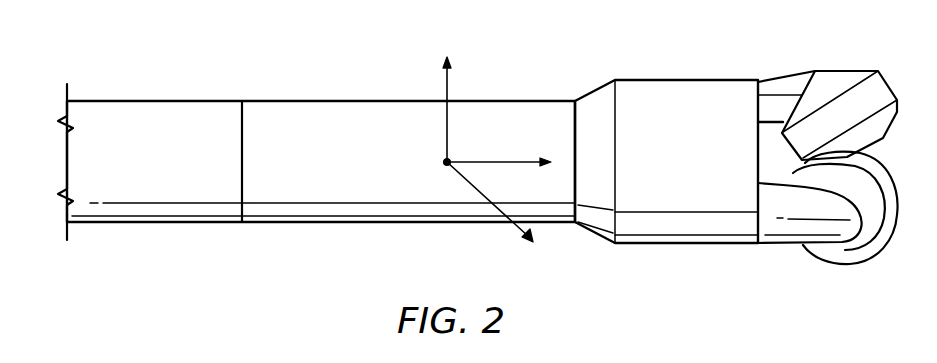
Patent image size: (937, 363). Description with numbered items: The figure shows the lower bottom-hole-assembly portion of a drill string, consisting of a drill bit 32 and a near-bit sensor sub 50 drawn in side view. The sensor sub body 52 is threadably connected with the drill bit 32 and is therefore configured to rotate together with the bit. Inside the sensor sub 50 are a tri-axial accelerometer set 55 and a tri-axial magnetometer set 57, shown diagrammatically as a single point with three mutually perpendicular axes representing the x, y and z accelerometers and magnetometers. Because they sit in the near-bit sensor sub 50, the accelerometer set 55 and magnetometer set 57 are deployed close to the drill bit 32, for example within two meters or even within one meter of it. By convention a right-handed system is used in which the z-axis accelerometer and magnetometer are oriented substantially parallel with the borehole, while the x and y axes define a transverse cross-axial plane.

The near-bit sensor sub 50 is at (330, 100).
The sensor sub body 52 is at (320, 223).
The drill bit 32 is at (687, 80).
The tri-axial accelerometer set 55 is at (444, 163).
The tri-axial magnetometer set 57 is at (447, 162).